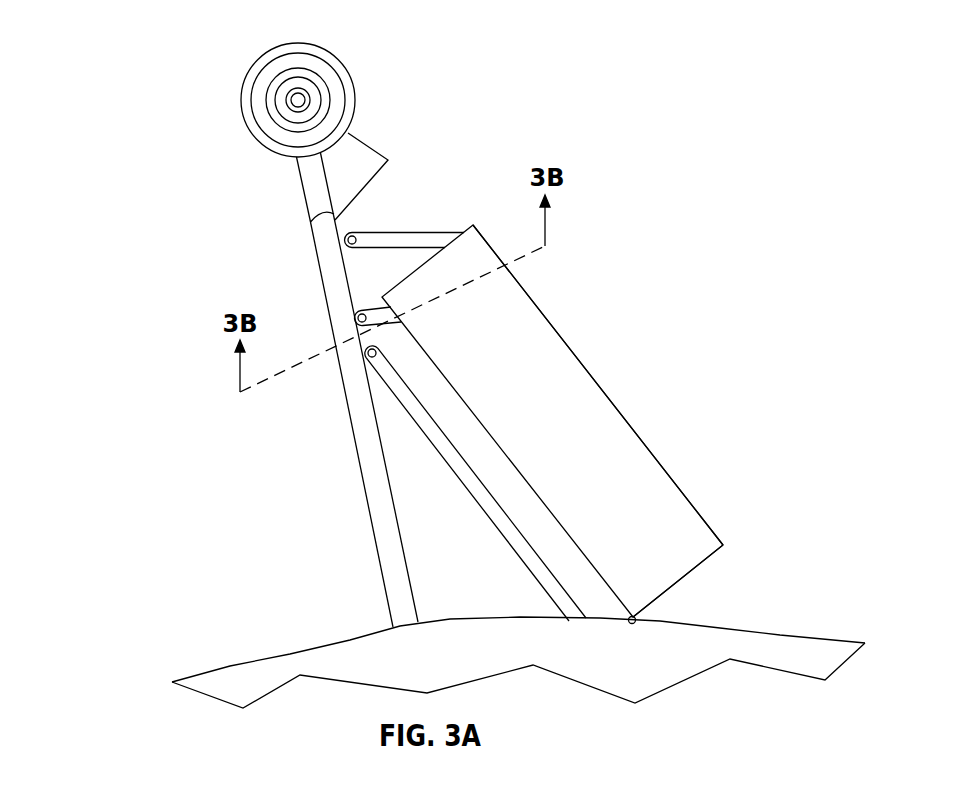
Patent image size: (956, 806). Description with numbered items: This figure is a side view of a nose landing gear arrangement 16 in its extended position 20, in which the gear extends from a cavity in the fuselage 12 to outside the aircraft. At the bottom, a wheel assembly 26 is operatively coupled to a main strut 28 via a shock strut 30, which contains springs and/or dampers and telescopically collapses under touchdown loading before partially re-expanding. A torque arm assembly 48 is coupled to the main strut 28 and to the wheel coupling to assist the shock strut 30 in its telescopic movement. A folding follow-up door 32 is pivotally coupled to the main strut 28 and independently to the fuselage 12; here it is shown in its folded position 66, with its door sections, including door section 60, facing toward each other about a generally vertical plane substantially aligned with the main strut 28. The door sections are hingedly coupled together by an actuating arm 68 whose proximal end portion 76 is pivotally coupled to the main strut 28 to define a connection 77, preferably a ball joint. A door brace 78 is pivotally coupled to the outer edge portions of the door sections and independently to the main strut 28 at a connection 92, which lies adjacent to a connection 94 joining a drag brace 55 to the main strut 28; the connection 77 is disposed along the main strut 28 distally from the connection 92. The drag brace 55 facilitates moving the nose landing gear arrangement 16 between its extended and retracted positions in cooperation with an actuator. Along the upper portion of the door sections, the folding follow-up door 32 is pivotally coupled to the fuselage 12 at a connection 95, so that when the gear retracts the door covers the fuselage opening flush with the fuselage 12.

The nose landing gear arrangement 16 is at (152, 62).
The wheel assembly 26 is at (298, 44).
The torque arm assembly 48 is at (372, 147).
The shock strut 30 is at (312, 192).
The main strut 28 is at (377, 492).
The actuating arm 68 is at (407, 231).
The proximal end portion 76 is at (400, 248).
The connection 77 is at (345, 245).
The door brace 78 is at (379, 306).
The connection 92 is at (353, 323).
The connection 94 is at (363, 365).
The drag brace 55 is at (493, 510).
The folded position 66 is at (592, 372).
The folding follow-up door 32 is at (682, 487).
The door section 60 is at (693, 566).
The extended position 20 is at (625, 298).
The connection 95 is at (630, 626).
The fuselage 12 is at (778, 635).